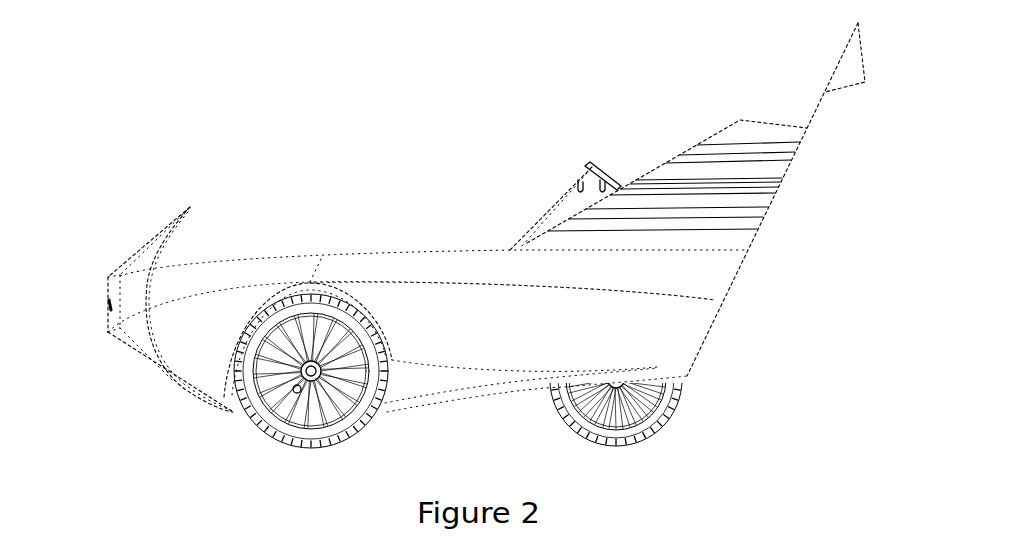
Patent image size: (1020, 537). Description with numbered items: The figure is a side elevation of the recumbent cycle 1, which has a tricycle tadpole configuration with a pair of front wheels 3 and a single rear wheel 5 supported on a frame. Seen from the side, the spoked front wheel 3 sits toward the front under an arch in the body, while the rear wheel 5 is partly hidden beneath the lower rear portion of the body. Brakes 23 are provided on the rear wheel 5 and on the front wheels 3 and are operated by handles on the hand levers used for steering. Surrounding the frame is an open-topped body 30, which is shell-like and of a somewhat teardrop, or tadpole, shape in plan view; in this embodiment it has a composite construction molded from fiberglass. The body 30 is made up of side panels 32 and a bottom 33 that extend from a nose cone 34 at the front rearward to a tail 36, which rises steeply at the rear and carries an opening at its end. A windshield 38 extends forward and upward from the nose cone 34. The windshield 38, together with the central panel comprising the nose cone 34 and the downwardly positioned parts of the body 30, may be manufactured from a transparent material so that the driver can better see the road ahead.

The recumbent cycle 1 is at (474, 183).
The front wheels 3 is at (312, 449).
The rear wheel 5 is at (673, 410).
The brakes 23 is at (294, 393).
The open-topped body 30 is at (268, 268).
The side panels 32 is at (457, 267).
The bottom 33 is at (505, 405).
The nose cone 34 is at (133, 295).
The tail 36 is at (737, 205).
The windshield 38 is at (158, 228).